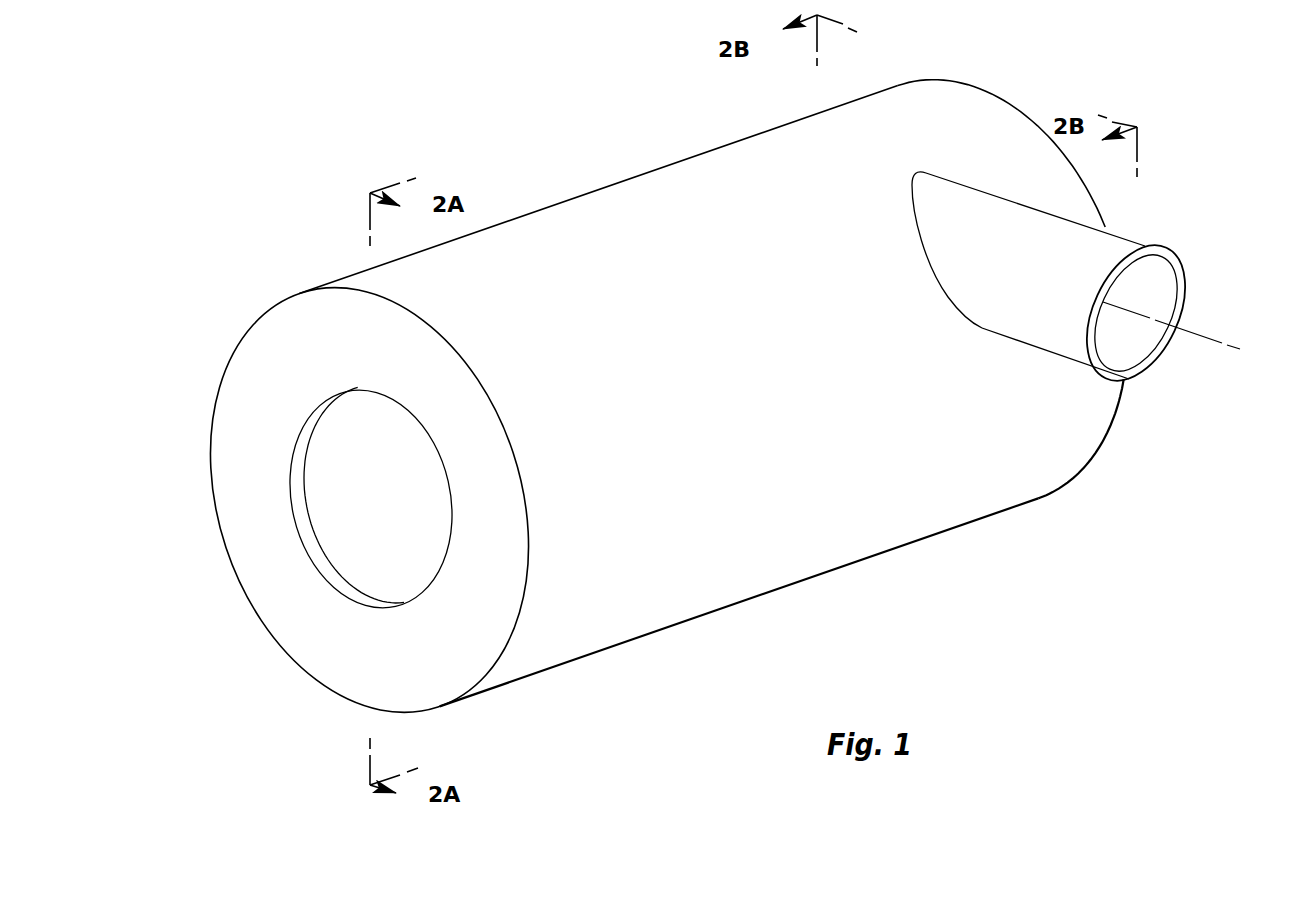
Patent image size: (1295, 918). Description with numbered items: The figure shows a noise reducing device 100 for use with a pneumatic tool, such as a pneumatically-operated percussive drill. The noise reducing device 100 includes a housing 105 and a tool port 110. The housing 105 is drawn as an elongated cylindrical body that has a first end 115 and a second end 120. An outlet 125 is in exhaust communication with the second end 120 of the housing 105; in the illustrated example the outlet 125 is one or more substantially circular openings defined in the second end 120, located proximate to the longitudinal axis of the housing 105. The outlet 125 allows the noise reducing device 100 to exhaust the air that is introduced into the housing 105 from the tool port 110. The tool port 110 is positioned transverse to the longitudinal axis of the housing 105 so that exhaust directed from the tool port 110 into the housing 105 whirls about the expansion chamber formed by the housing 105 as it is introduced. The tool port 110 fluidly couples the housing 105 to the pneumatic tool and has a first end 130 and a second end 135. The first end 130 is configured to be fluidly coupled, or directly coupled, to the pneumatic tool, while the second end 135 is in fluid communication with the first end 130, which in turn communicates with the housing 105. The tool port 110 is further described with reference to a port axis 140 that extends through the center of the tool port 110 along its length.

The noise reducing device 100 is at (520, 72).
The housing 105 is at (555, 172).
The tool port 110 is at (1126, 235).
The first end 115 is at (1071, 495).
The second end 120 is at (450, 715).
The outlet 125 is at (337, 503).
The first end 130 is at (1180, 250).
The second end 135 is at (955, 160).
The port axis 140 is at (1192, 333).